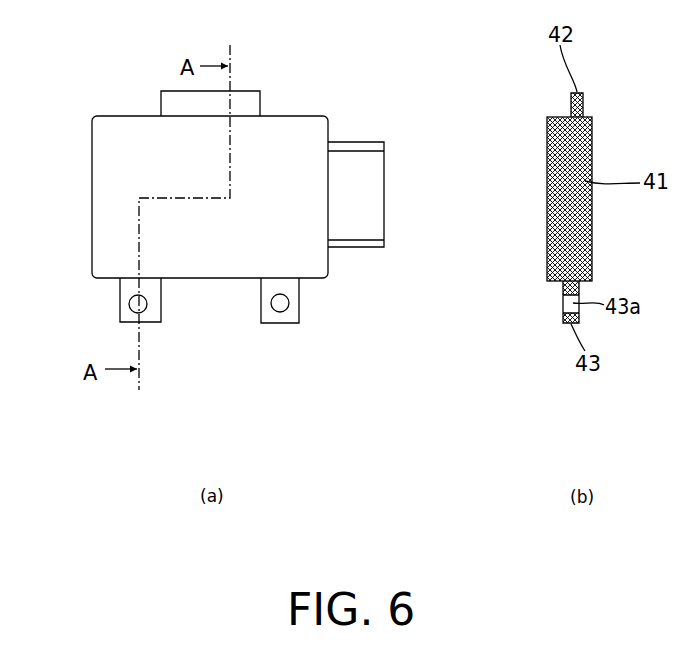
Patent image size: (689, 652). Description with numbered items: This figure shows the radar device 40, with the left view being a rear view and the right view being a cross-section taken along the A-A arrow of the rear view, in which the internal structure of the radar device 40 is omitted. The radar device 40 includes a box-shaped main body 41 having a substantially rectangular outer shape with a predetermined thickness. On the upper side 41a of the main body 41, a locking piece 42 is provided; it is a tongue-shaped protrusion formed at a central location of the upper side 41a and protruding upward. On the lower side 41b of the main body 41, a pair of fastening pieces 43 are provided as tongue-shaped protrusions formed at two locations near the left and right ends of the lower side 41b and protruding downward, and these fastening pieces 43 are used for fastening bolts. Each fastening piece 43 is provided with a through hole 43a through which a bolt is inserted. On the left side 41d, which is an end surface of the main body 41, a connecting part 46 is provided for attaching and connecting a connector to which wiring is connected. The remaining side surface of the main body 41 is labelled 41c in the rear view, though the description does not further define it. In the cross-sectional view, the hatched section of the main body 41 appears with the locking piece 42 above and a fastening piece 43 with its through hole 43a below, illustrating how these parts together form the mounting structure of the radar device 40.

The radar device 40 is at (340, 119).
The main body 41 is at (297, 130).
The upper side 41a is at (128, 115).
The lower side 41b is at (233, 280).
The left side surface of body 41c is at (122, 205).
The left side 41d is at (330, 265).
The locking piece 42 is at (248, 101).
The fastening piece 43 is at (125, 322).
The through hole 43a is at (146, 306).
The connecting part 46 is at (372, 186).